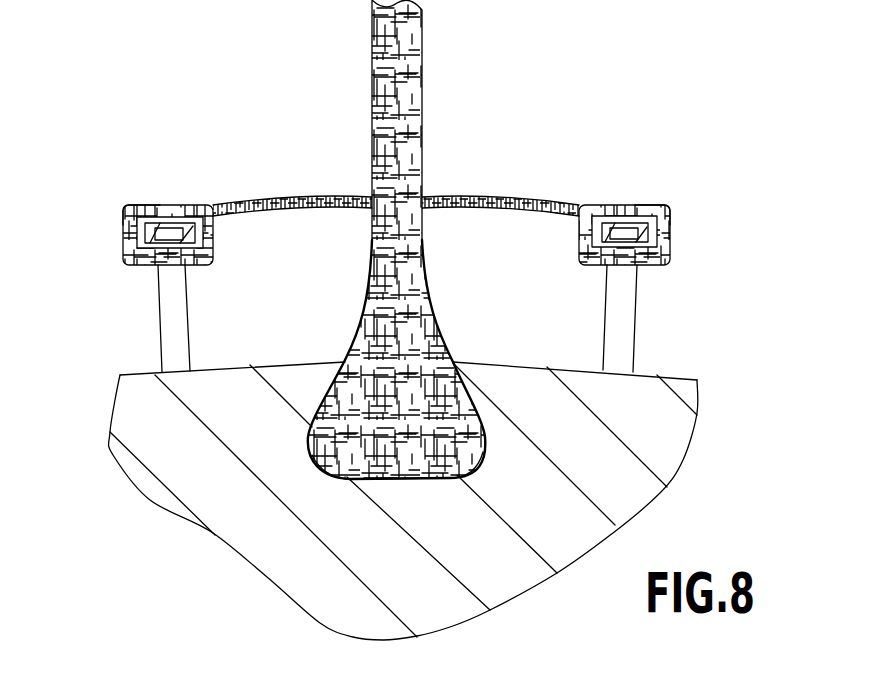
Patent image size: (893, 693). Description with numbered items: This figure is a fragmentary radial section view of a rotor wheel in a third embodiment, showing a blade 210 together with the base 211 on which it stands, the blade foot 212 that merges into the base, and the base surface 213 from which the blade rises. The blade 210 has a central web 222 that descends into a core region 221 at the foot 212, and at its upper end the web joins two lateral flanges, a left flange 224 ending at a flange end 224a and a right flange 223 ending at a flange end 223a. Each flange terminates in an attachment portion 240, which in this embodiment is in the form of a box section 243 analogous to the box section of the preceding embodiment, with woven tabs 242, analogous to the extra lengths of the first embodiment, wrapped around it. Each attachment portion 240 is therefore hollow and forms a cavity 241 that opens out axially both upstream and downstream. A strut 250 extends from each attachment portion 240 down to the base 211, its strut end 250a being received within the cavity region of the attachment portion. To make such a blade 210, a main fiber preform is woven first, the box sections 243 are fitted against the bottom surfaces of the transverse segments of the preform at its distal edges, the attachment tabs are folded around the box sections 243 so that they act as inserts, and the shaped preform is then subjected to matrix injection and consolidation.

The blade 210 is at (567, 90).
The base skin 211 is at (408, 570).
The foot of stiffener 212 is at (333, 473).
The surface of base skin 213 is at (258, 366).
The foot core 221 is at (413, 380).
The web 222 is at (403, 90).
The right flange 223 is at (521, 201).
The right flange end 223a is at (647, 205).
The left flange 224 is at (275, 203).
The left flange end 224a is at (143, 205).
The attachment portion 240 is at (397, 233).
The cavity 241 is at (210, 228).
The woven tabs 242 is at (132, 240).
The box section 243 is at (135, 218).
The support strut 250 is at (153, 314).
The strut end 250a is at (170, 228).